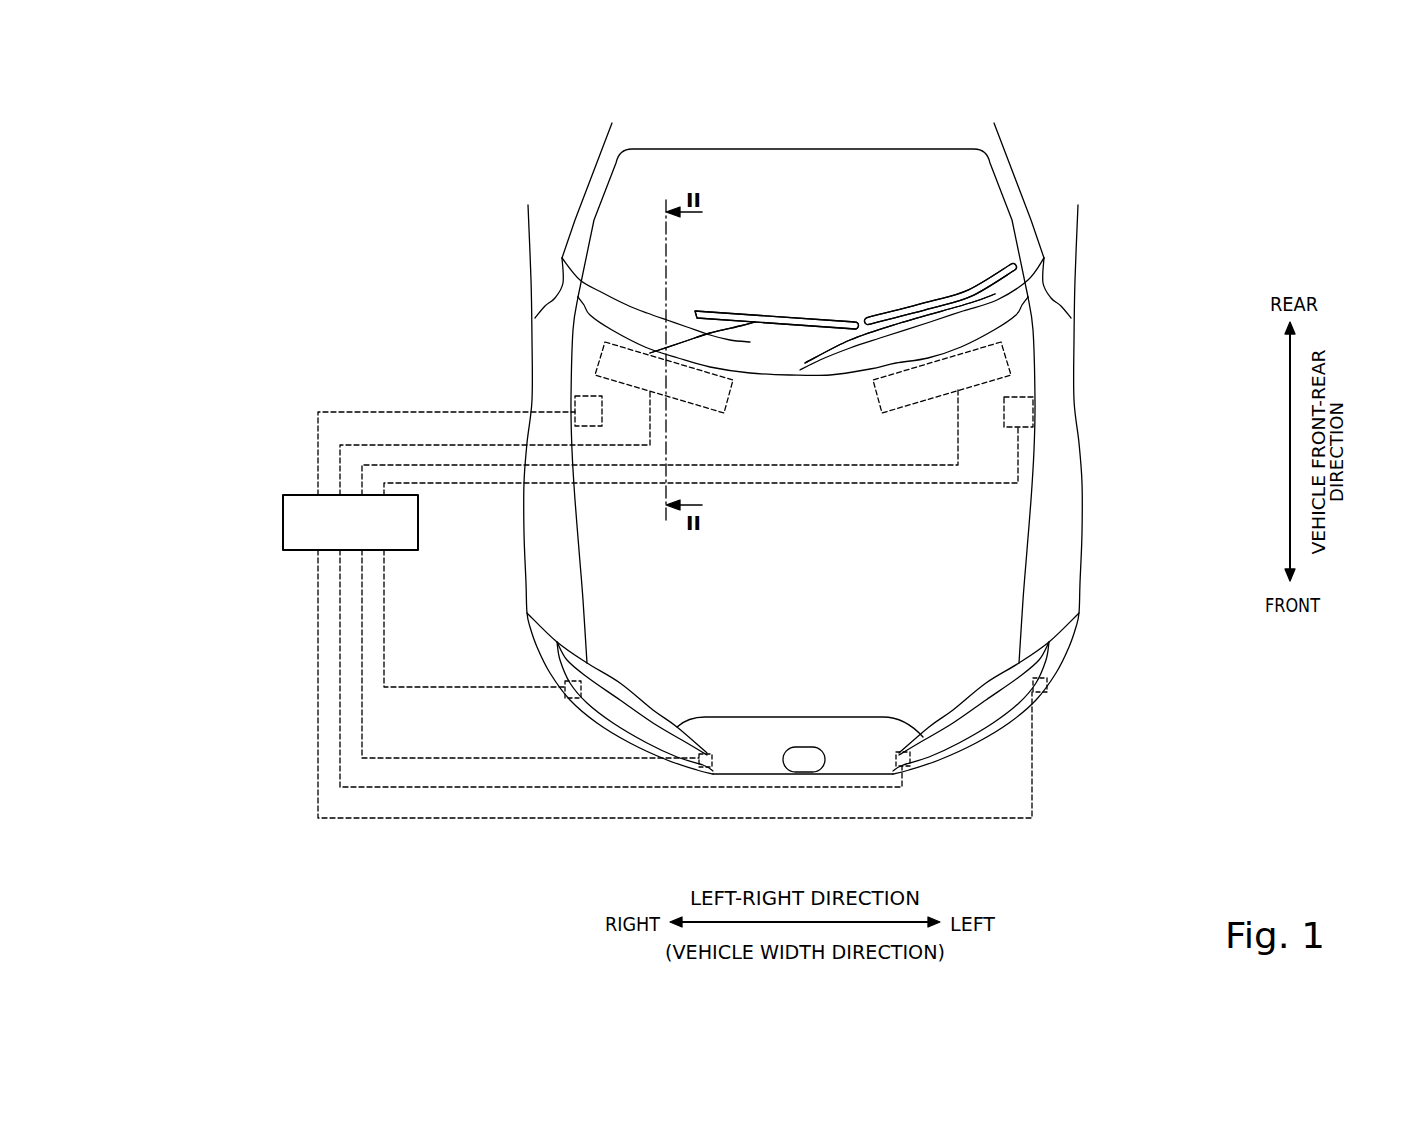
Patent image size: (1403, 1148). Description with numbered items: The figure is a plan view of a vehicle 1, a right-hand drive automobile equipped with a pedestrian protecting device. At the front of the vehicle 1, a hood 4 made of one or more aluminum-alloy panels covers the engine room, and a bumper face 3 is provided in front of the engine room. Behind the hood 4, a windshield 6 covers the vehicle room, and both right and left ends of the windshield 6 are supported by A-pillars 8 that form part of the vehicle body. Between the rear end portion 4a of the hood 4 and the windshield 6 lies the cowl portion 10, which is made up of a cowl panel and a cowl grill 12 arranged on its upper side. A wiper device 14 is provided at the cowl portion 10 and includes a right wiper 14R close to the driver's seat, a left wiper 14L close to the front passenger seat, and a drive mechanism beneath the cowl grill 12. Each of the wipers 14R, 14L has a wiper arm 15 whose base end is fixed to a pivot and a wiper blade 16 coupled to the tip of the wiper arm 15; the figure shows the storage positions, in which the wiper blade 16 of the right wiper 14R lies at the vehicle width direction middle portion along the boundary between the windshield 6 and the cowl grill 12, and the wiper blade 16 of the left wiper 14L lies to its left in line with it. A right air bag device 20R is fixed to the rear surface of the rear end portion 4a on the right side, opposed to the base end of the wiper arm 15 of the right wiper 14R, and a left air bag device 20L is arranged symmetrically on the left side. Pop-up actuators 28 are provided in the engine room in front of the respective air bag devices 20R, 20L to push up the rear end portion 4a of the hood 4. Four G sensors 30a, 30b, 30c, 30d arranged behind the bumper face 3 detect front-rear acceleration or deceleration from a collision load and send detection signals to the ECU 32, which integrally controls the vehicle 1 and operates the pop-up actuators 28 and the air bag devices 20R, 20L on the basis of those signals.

The vehicle 1 is at (1038, 107).
The bumper face 3 is at (762, 760).
The hood 4 is at (1010, 528).
The rear end portion 4a is at (767, 412).
The windshield 6 is at (842, 185).
The A-pillar 8 is at (597, 188).
The cowl portion 10 is at (875, 314).
The cowl grill 12 is at (993, 321).
The wiper device 14 is at (833, 281).
The right wiper 14R is at (798, 246).
The left wiper 14L is at (966, 246).
The wiper arm 15 is at (676, 337).
The wiper blade 16 is at (803, 316).
The right air bag device 20R is at (640, 352).
The left air bag device 20L is at (1003, 350).
The pop-up actuator 28 is at (582, 402).
The G sensor 30a is at (567, 694).
The G sensor 30b is at (706, 753).
The G sensor 30c is at (912, 758).
The G sensor 30d is at (1050, 685).
The ECU 32 is at (283, 523).